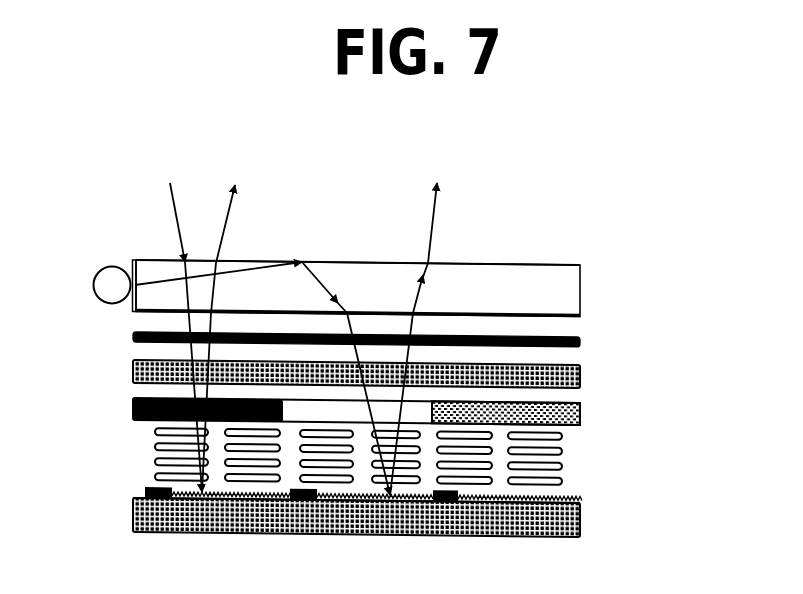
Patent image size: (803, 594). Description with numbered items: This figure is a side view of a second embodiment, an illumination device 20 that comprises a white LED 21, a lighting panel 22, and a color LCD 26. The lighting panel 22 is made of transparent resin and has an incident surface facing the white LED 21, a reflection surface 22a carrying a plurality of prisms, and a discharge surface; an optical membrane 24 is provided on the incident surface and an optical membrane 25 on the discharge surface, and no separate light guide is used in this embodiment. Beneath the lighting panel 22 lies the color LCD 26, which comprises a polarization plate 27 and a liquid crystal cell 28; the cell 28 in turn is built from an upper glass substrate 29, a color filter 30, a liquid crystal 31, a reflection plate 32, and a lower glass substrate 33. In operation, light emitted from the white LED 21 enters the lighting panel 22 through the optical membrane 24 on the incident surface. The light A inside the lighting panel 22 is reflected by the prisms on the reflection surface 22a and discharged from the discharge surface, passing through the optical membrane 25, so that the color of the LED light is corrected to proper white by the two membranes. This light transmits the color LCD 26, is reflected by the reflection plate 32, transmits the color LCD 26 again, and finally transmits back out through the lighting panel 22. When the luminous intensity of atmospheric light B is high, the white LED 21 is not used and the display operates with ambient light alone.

The illumination device 20 is at (557, 223).
The white LED 21 is at (95, 291).
The lighting panel 22 is at (155, 302).
The reflection surface 22a is at (493, 263).
The optical membrane 24 is at (133, 263).
The optical membrane 25 is at (582, 318).
The color LCD 26 is at (723, 332).
The polarization plate 27 is at (582, 343).
The liquid crystal cell 28 is at (673, 358).
The upper glass substrate 29 is at (582, 378).
The color filter 30 is at (582, 413).
The liquid crystal 31 is at (562, 468).
The reflection plate 32 is at (568, 498).
The lower glass substrate 33 is at (582, 525).
The light A is at (262, 262).
The atmospheric light B is at (177, 215).